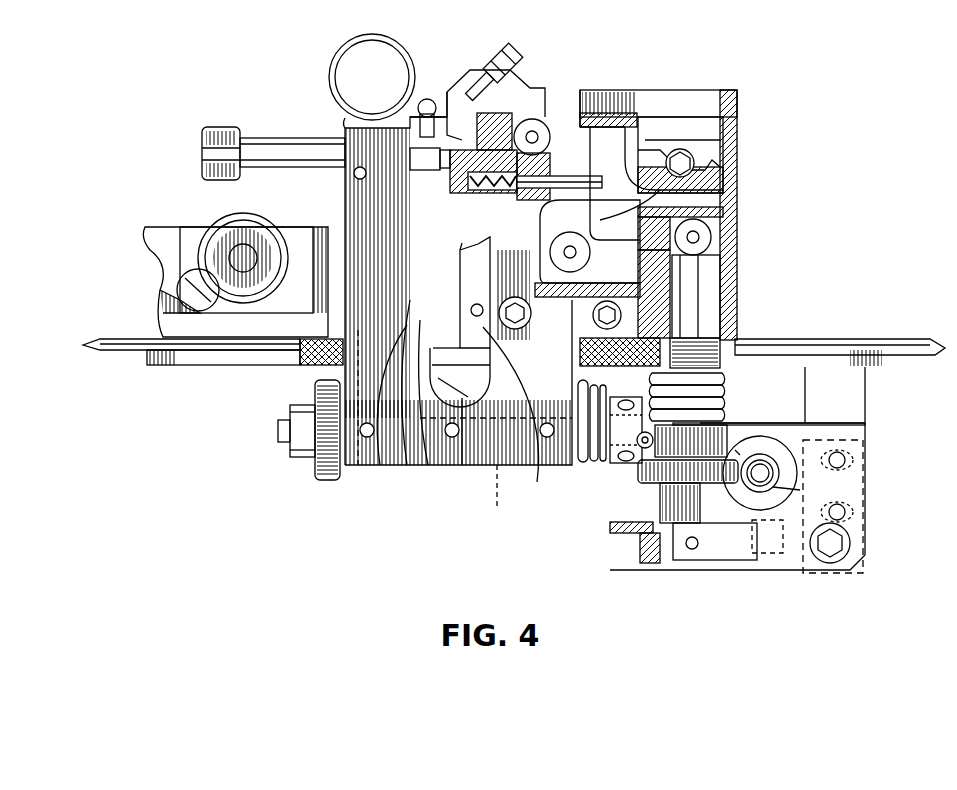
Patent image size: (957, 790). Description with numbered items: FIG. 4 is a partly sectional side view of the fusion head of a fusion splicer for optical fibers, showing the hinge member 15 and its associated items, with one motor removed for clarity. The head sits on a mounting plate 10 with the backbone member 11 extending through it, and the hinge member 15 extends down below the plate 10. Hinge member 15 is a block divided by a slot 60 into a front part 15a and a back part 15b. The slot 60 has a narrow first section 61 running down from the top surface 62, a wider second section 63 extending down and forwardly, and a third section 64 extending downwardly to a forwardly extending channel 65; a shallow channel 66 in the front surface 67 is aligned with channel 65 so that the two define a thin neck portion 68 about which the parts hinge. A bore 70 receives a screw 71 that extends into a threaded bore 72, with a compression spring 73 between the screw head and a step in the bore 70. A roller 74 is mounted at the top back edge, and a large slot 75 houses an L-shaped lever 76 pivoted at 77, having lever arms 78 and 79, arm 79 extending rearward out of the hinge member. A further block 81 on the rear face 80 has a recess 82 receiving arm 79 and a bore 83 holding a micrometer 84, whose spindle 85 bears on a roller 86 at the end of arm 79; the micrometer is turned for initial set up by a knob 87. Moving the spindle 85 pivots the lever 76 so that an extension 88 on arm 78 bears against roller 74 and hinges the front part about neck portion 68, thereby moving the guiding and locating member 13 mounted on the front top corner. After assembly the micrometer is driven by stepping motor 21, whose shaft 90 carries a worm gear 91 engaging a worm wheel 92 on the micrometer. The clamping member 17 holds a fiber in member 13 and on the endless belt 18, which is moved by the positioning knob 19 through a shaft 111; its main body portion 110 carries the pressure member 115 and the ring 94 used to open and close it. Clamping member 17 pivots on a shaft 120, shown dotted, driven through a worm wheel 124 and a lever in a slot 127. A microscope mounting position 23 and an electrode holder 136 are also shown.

The mounting plate 10 is at (120, 350).
The backbone member 11 is at (170, 333).
The guiding and locating member 13 is at (465, 70).
The hinge member 15 is at (494, 466).
The front part of hinge member 15a is at (435, 240).
The back part of hinge member 15b is at (521, 404).
The clamping member 17 is at (433, 98).
The endless belt 18 is at (347, 133).
The positioning knob 19 is at (219, 126).
The stepping motor 21 is at (850, 478).
The microscope mounting position 23 is at (190, 243).
The slot 60 is at (468, 284).
The narrow first section 61 is at (612, 135).
The top surface 62 is at (565, 118).
The second section 63 is at (460, 258).
The third section 64 is at (537, 472).
The forwardly extending channel 65 is at (430, 466).
The shallow channel 66 is at (407, 466).
The front surface 67 is at (380, 466).
The neck portion 68 is at (463, 466).
The bore 70 is at (440, 160).
The screw 71 is at (457, 181).
The threaded bore 72 is at (635, 158).
The compression spring 73 is at (535, 118).
The roller 74 is at (545, 170).
The large slot 75 is at (652, 148).
The L-shaped lever 76 is at (656, 183).
The pivot 77 is at (560, 275).
The lever arm 78 is at (668, 152).
The lever arm 79 is at (737, 207).
The rear face 80 is at (700, 140).
The block 81 is at (722, 147).
The recess 82 is at (737, 217).
The bore 83 is at (713, 287).
The micrometer 84 is at (743, 341).
The spindle 85 is at (690, 272).
The roller 86 is at (700, 242).
The knob 87 is at (653, 505).
The extension 88 is at (583, 124).
The motor shaft 90 is at (770, 468).
The worm gear 91 is at (800, 490).
The worm wheel 92 is at (643, 477).
The ring 94 is at (353, 50).
The main body portion 110 is at (312, 366).
The shaft 111 is at (266, 146).
The pressure member 115 is at (465, 130).
The shaft 120 is at (516, 497).
The worm wheel 124 is at (327, 482).
The slot 127 is at (297, 460).
The electrode holder 136 is at (500, 62).